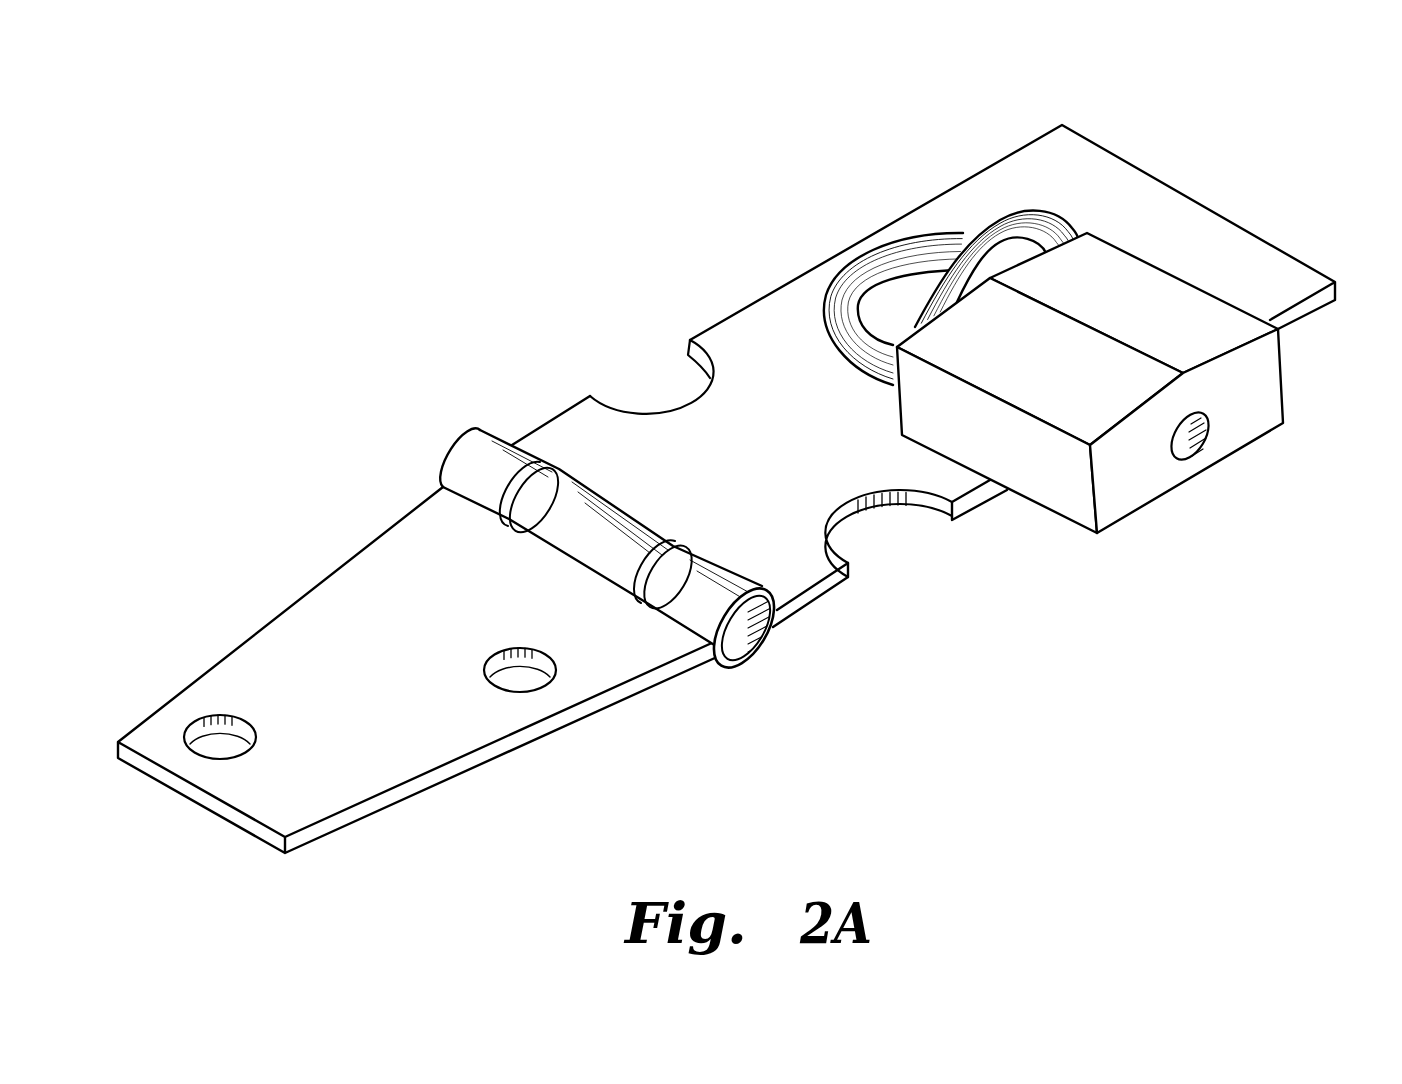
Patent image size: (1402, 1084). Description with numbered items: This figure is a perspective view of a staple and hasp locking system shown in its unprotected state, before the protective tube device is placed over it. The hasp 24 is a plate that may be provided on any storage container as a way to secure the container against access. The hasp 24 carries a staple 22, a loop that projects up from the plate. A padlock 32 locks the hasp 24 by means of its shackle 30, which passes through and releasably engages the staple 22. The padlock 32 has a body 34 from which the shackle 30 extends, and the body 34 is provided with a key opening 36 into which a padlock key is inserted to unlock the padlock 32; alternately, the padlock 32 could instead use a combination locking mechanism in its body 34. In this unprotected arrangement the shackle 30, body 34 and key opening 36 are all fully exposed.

The staple 22 is at (999, 212).
The hasp 24 is at (1127, 200).
The shackle 30 is at (866, 247).
The padlock 32 is at (1182, 313).
The body 34 is at (1070, 382).
The key opening 36 is at (1208, 433).